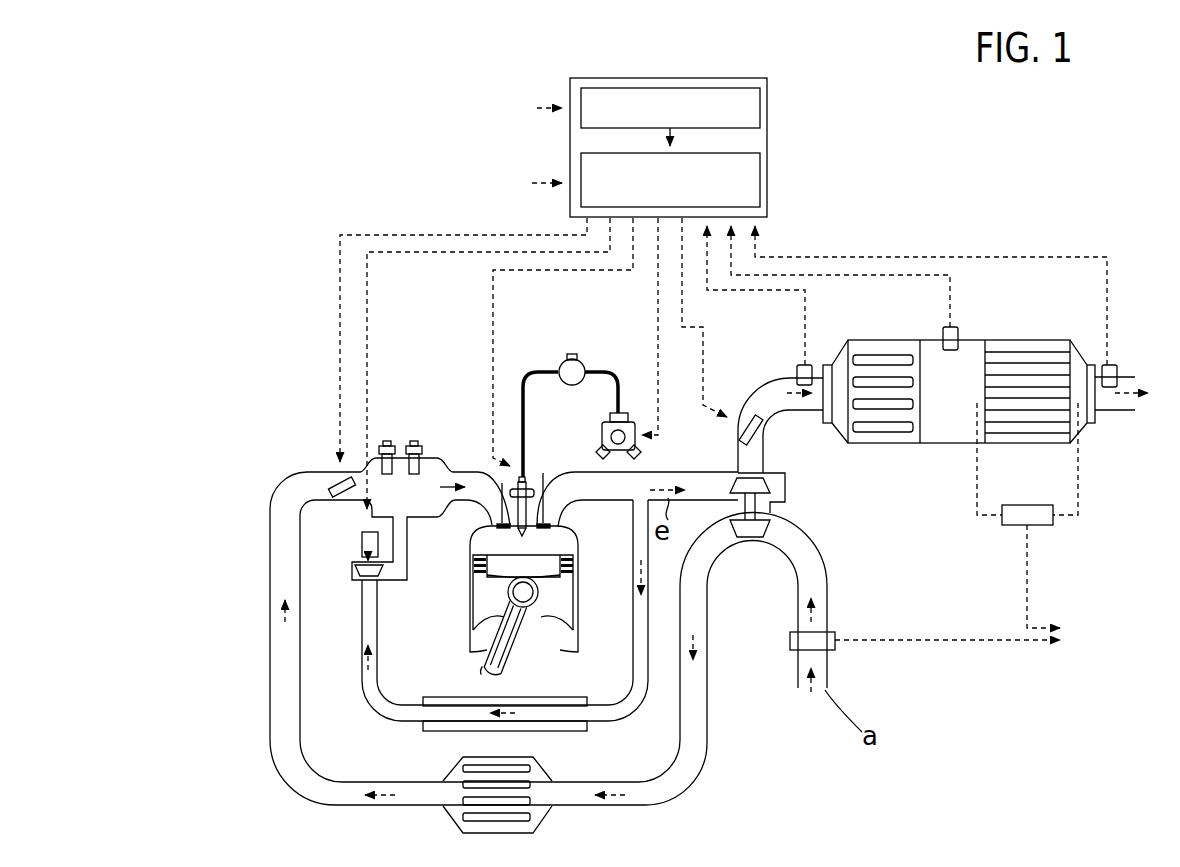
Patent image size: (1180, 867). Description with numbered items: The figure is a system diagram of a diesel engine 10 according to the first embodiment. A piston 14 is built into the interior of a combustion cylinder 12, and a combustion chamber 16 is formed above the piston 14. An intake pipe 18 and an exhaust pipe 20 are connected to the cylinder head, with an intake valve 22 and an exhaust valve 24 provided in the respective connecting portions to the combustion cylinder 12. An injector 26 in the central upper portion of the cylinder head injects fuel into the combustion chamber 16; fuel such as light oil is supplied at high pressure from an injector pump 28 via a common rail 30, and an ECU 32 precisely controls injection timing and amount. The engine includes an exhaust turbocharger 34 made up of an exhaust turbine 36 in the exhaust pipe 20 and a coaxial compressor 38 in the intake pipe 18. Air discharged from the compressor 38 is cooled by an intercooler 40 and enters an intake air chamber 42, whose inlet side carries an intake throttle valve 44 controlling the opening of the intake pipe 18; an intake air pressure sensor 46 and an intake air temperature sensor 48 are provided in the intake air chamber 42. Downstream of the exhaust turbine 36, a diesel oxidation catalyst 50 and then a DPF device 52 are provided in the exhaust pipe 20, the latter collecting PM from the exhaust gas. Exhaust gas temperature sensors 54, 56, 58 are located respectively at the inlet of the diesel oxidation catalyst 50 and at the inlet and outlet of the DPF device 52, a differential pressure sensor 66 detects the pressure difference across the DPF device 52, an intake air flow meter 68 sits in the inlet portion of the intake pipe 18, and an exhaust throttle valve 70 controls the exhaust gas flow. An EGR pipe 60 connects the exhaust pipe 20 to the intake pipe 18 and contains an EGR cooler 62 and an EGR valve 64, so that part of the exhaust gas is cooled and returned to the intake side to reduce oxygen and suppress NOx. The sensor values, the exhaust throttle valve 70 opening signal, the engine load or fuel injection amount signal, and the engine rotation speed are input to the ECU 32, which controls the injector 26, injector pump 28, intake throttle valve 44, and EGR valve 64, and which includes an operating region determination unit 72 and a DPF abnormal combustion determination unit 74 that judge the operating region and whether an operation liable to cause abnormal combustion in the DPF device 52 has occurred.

The diesel engine 10 is at (313, 275).
The combustion cylinder 12 is at (470, 545).
The piston 14 is at (568, 598).
The combustion chamber 16 is at (560, 542).
The intake pipe 18 is at (270, 690).
The exhaust pipe 20 is at (768, 380).
The intake valve 22 is at (495, 515).
The exhaust valve 24 is at (543, 478).
The injector 26 is at (515, 478).
The injector pump 28 is at (602, 432).
The common rail 30 is at (571, 370).
The ECU 32 is at (768, 140).
The exhaust turbocharger 34 is at (762, 508).
The exhaust turbine 36 is at (755, 478).
The compressor 38 is at (752, 538).
The intercooler 40 is at (515, 833).
The intake air chamber 42 is at (436, 458).
The intake throttle valve 44 is at (330, 485).
The intake air pressure sensor 46 is at (388, 440).
The intake air temperature sensor 48 is at (414, 442).
The diesel oxidation catalyst 50 is at (877, 445).
The DPF device 52 is at (1027, 445).
The exhaust gas temperature sensor 54 is at (805, 365).
The exhaust gas temperature sensor 56 is at (943, 330).
The exhaust gas temperature sensor 58 is at (1115, 365).
The EGR pipe 60 is at (640, 705).
The EGR cooler 62 is at (430, 722).
The EGR valve 64 is at (362, 545).
The differential pressure sensor 66 is at (1043, 525).
The intake air flow meter 68 is at (838, 650).
The exhaust throttle valve 70 is at (742, 437).
The operating region determination unit 72 is at (768, 103).
The DPF abnormal combustion determination unit 74 is at (762, 181).